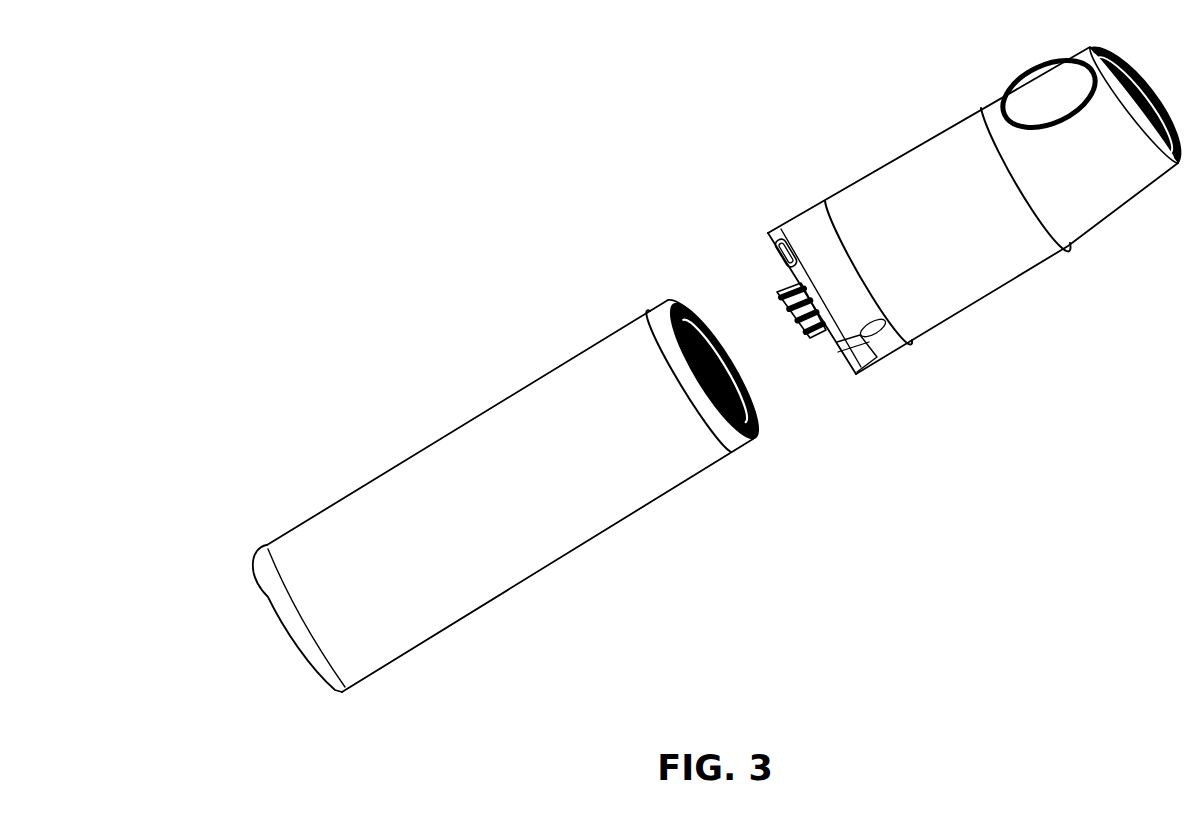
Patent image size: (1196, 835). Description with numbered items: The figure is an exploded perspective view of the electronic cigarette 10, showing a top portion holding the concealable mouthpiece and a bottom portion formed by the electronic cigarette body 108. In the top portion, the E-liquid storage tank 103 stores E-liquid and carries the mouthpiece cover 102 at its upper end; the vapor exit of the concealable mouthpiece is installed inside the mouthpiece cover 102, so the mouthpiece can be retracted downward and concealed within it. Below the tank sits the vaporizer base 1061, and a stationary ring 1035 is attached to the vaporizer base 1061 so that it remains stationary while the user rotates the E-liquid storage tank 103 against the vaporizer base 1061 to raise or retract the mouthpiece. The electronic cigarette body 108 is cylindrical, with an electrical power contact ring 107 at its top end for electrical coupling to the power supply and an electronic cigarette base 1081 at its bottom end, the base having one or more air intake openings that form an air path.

The electronic cigarette 10 is at (249, 112).
The mouthpiece cover 102 is at (998, 108).
The E-liquid storage tank 103 is at (893, 171).
The stationary ring 1035 is at (822, 228).
The vaporizer base 1061 is at (800, 284).
The electrical power contact ring 107 is at (662, 313).
The electronic cigarette body 108 is at (467, 425).
The electronic cigarette base 1081 is at (263, 562).